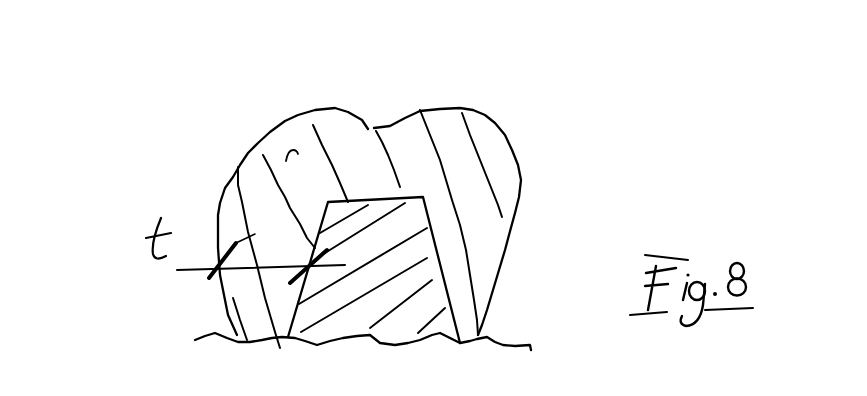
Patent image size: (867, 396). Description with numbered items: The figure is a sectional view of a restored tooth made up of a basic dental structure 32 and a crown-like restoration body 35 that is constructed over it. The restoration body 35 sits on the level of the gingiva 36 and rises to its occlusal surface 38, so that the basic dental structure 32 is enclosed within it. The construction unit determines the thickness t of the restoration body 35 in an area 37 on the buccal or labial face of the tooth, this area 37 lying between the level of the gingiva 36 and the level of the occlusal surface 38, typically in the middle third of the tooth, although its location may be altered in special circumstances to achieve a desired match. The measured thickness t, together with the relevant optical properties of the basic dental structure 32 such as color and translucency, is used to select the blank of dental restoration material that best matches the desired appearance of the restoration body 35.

The basic dental structure 32 is at (427, 260).
The restoration body 35 is at (468, 125).
The gingiva 36 is at (213, 332).
The area 37 is at (228, 185).
The occlusal surface 38 is at (384, 118).